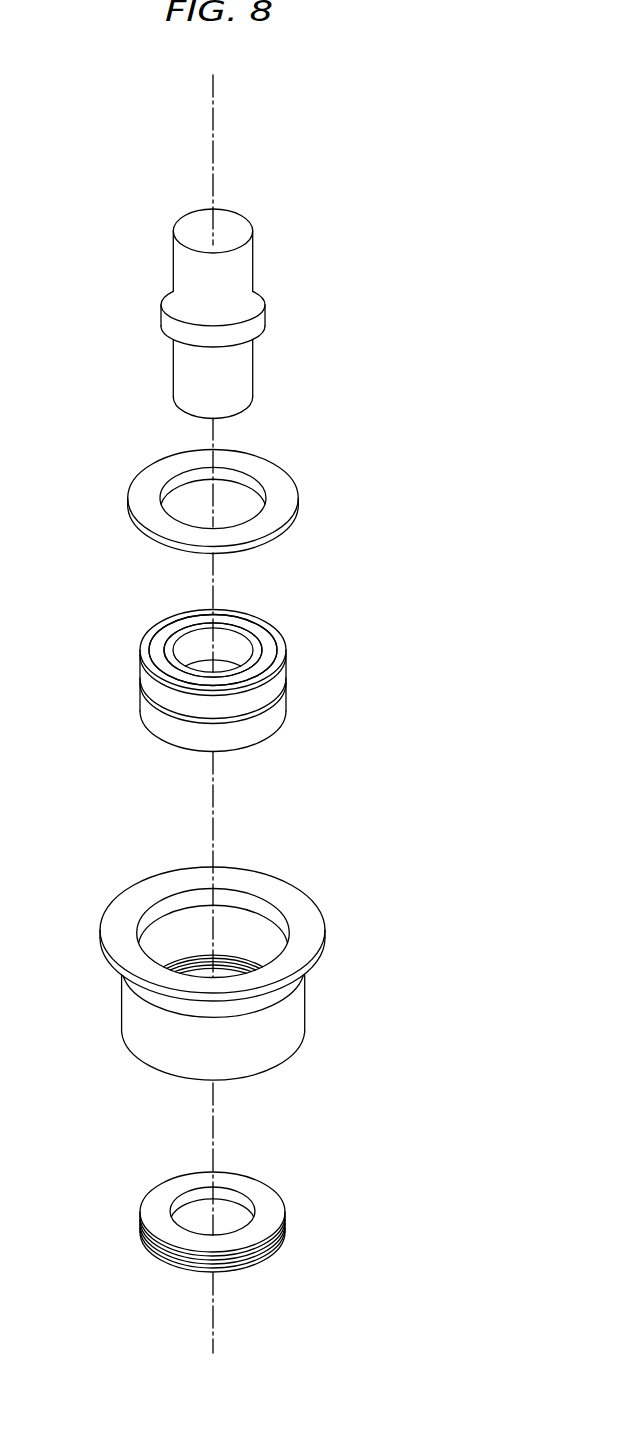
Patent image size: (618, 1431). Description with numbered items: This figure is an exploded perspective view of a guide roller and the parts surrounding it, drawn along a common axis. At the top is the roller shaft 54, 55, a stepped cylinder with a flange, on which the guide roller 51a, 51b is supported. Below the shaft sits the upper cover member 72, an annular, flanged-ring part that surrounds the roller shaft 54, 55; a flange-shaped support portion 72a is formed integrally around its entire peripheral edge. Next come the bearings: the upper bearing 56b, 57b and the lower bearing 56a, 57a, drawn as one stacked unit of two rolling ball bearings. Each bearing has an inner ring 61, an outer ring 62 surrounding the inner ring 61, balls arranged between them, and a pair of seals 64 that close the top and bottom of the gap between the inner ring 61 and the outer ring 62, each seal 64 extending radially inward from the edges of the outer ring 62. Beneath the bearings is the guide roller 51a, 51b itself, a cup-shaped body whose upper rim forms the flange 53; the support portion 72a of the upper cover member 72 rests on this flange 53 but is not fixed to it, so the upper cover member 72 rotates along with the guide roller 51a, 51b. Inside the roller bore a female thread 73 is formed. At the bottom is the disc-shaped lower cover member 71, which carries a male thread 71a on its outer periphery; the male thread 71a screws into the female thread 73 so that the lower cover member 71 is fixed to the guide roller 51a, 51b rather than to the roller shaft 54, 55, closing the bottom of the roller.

The roller shaft 54 is at (279, 313).
The roller shaft 55 is at (253, 254).
The upper cover member 72 is at (291, 502).
The support portion 72a is at (298, 500).
The upper bearing 56b is at (269, 633).
The upper bearing 57b is at (269, 633).
The lower bearing 56a is at (299, 717).
The lower bearing 57a is at (287, 707).
The inner ring 61 is at (238, 631).
The outer ring 62 is at (142, 650).
The seal 64 is at (265, 642).
The flange 53 is at (308, 917).
The guide roller 51a is at (252, 954).
The guide roller 51b is at (252, 954).
The female thread 73 is at (187, 968).
The lower cover member 71 is at (258, 1249).
The male thread 71a is at (280, 1248).